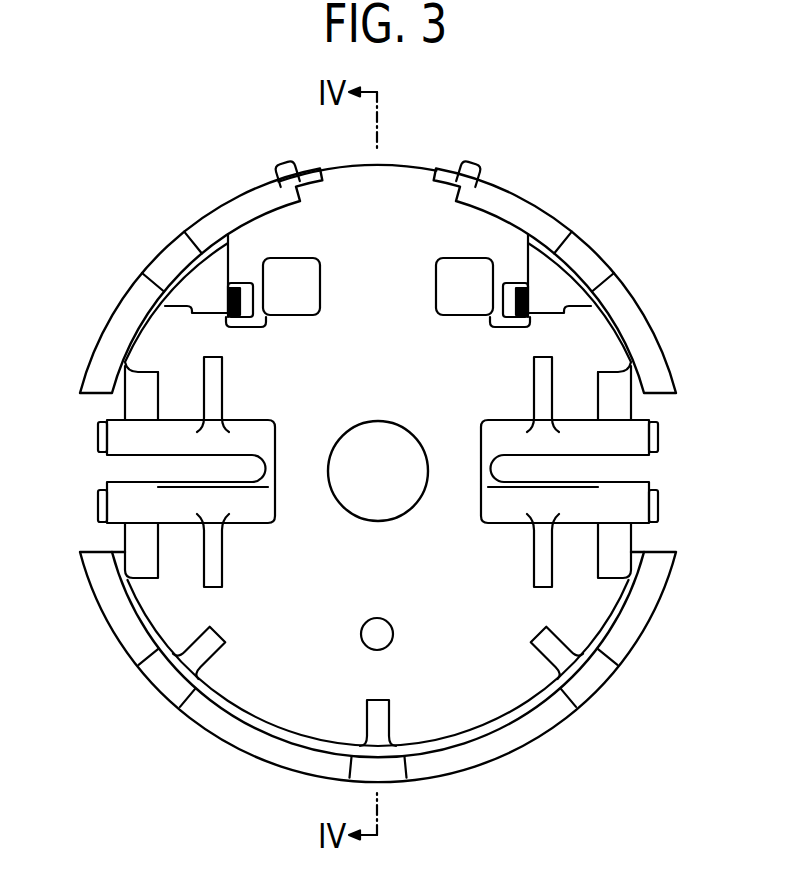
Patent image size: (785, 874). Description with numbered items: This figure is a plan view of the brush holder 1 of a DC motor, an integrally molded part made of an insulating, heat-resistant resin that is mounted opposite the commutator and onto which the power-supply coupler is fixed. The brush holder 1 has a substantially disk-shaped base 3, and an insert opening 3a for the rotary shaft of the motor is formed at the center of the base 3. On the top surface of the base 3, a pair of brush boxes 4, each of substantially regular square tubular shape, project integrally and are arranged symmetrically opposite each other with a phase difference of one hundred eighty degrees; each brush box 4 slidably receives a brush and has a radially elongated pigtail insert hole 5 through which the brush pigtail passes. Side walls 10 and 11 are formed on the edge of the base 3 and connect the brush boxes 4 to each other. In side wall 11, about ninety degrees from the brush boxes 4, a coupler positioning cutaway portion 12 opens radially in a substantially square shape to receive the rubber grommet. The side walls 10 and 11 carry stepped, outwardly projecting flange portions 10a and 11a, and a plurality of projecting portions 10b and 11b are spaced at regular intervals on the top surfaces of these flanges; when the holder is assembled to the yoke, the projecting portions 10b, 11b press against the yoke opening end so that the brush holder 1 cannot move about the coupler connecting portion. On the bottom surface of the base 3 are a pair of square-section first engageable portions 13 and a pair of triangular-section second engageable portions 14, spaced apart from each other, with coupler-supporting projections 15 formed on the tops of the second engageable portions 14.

The brush holder 1 is at (458, 78).
The base 3 is at (282, 695).
The insert opening 3a is at (378, 521).
The brush box 4 is at (263, 513).
The pigtail insert hole 5 is at (250, 468).
The side wall 10 is at (500, 757).
The flange portion 10a is at (547, 717).
The projecting portion 10b is at (168, 684).
The side wall 11 is at (88, 368).
The flange portion 11a is at (128, 306).
The projecting portion 11b is at (170, 248).
The coupler positioning cutaway portion 12 is at (433, 176).
The first engageable portion 13 is at (312, 292).
The second engageable portion 14 is at (212, 302).
The projection 15 is at (256, 316).